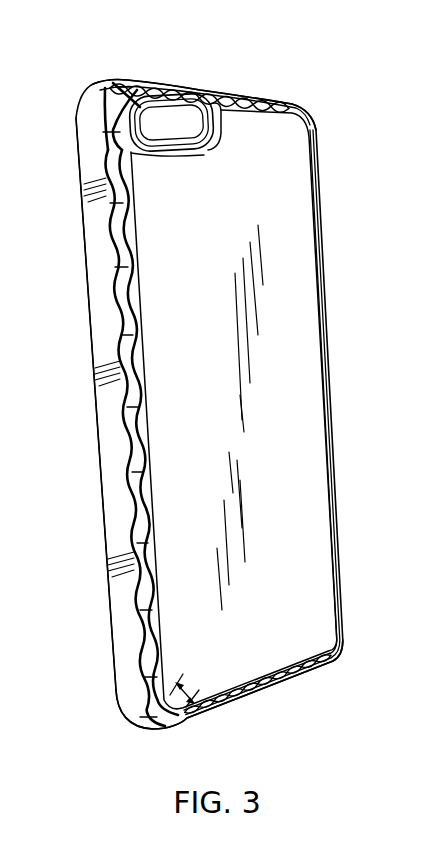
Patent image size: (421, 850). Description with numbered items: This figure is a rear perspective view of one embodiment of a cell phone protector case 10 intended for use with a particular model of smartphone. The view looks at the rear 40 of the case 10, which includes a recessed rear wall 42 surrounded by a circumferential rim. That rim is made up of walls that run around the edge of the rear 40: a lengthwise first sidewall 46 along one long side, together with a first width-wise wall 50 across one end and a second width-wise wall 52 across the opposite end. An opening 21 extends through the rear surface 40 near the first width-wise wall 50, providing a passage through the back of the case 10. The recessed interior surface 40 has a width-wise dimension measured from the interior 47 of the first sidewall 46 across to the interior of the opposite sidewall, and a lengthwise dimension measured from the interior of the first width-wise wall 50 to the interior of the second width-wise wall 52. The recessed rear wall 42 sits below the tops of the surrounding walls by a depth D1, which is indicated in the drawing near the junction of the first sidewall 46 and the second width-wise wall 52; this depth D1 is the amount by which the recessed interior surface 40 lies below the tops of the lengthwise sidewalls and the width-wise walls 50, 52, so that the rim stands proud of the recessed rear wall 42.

The cell phone protector case 10 is at (344, 150).
The opening 21 is at (162, 135).
The rear 40 is at (301, 222).
The recessed rear wall 42 is at (187, 336).
The first sidewall 46 is at (110, 438).
The interior of first sidewall 47 is at (147, 323).
The first width-wise wall 50 is at (106, 84).
The second width-wise wall 52 is at (144, 730).
The depth D1 is at (190, 690).